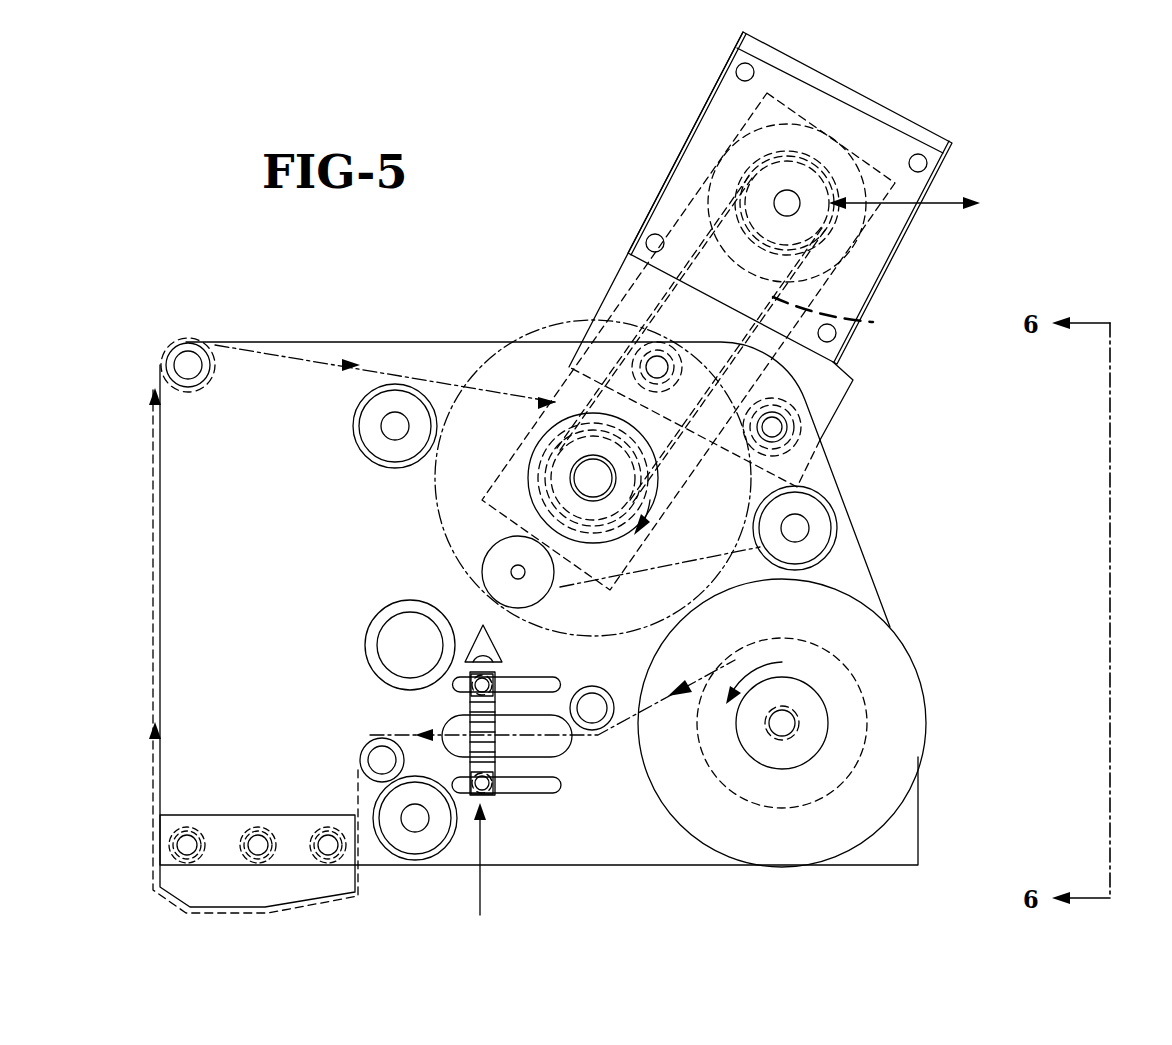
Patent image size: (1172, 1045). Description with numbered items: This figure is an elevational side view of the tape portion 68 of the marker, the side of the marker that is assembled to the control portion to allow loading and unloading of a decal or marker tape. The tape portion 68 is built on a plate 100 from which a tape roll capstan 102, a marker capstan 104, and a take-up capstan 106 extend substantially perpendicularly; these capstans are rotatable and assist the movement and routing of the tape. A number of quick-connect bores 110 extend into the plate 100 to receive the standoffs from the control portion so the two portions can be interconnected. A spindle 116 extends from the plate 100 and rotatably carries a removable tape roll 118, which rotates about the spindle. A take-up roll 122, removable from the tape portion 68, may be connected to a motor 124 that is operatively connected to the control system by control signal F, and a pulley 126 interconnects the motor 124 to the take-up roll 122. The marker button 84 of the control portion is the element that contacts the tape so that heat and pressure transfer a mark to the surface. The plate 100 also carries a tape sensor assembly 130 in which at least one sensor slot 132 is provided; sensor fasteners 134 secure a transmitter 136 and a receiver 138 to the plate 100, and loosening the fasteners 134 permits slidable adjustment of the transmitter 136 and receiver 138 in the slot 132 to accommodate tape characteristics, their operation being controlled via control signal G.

The tape portion 68 is at (1104, 236).
The marker button 84 is at (208, 883).
The plate 100 is at (862, 555).
The tape roll capstan 102 is at (610, 688).
The marker capstan 104 is at (362, 752).
The take-up capstan 106 is at (212, 355).
The quick-connect bores 110 is at (370, 463).
The spindle 116 is at (797, 768).
The tape roll 118 is at (910, 650).
The take-up roll 122 is at (490, 352).
The motor 124 is at (837, 82).
The pulley 126 is at (853, 320).
The tape sensor assembly 130 is at (582, 766).
The sensor slot 132 is at (560, 683).
The sensor fasteners 134 is at (528, 674).
The transmitter 136 is at (470, 690).
The receiver 138 is at (470, 782).